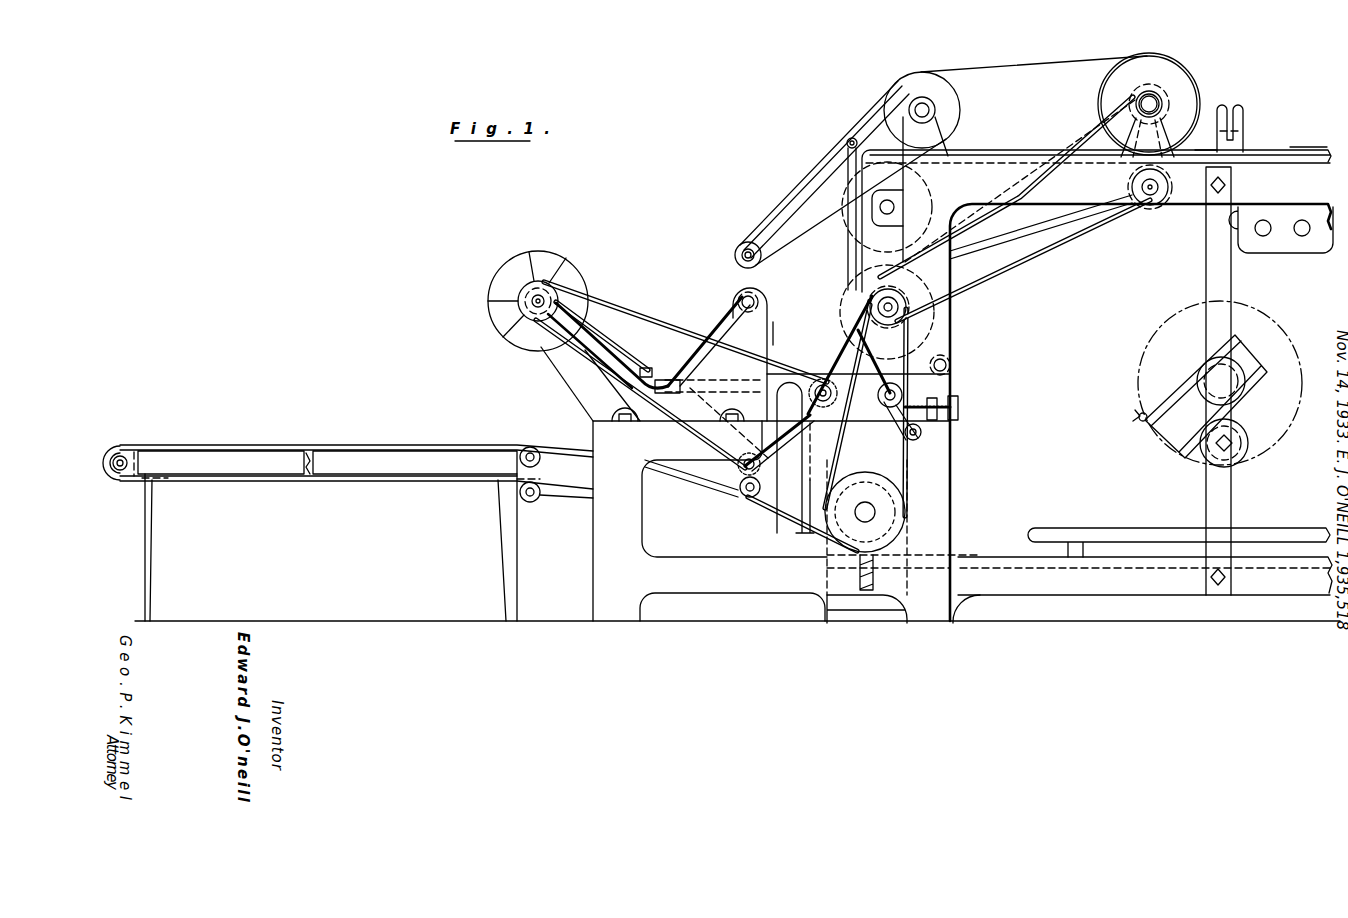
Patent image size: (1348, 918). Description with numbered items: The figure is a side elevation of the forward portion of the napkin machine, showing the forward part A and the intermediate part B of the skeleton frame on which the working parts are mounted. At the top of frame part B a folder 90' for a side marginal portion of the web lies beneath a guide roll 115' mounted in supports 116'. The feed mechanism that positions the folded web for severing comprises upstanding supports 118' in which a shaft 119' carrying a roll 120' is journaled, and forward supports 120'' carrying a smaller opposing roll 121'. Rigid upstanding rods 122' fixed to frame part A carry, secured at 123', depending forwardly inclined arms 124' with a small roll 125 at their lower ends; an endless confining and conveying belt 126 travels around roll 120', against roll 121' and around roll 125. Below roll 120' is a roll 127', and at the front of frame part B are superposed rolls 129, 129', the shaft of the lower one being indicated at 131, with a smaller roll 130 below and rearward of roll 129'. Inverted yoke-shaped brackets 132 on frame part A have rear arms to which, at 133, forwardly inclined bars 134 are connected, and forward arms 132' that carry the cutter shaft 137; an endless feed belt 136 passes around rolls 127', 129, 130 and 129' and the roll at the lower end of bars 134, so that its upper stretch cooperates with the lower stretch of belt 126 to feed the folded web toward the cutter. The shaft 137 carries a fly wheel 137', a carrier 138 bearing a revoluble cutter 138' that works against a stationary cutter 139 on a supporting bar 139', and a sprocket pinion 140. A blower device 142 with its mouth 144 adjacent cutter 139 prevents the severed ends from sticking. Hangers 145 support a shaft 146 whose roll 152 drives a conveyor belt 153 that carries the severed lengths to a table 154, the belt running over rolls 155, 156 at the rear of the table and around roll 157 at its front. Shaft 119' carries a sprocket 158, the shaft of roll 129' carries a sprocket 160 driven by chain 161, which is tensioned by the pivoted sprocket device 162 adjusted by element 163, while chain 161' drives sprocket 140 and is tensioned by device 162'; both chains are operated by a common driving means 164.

The folder 90' is at (1308, 139).
The guide roll 115' is at (1252, 124).
The supports 116' is at (1245, 138).
The upstanding supports 118' is at (1182, 121).
The shaft 119' is at (1187, 76).
The roll 120' is at (1127, 104).
The supports 120'' is at (962, 179).
The roll 121' is at (944, 91).
The upstanding rods 122' is at (832, 219).
The securing point 123' is at (849, 122).
The depending forwardly inclined arms 124' is at (843, 173).
The roll 125 is at (743, 250).
The endless confining and conveying belt 126 is at (1053, 63).
The roll 127' is at (887, 306).
The roll 129 is at (887, 207).
The roll 129' is at (873, 312).
The roll 130 is at (951, 363).
The shaft 131 is at (898, 307).
The inverted yoke-shaped brackets 132 is at (708, 396).
The forward arms 132' is at (586, 385).
The connection 133 is at (760, 288).
The bars 134 is at (717, 323).
The endless feed belt 136 is at (1081, 226).
The cutter shaft 137 is at (567, 284).
The fly wheel 137' is at (540, 282).
The carrier 138 is at (602, 323).
The revoluble cutter 138' is at (657, 354).
The stationary cutter 139 is at (652, 345).
The supporting bar 139' is at (652, 394).
The sprocket pinion 140 is at (513, 333).
The blower device 142 is at (782, 383).
The mouth 144 is at (680, 360).
The hangers 145 is at (750, 460).
The shaft 146 is at (758, 522).
The roll 152 is at (748, 498).
The conveyor belt 153 is at (690, 497).
The table 154 is at (413, 455).
The roll 155 is at (541, 458).
The roll 156 is at (541, 496).
The roll 157 is at (122, 446).
The sprocket 158 is at (1100, 118).
The sprocket 160 is at (907, 335).
The endless chain 161 is at (849, 355).
The endless chain 161' is at (783, 321).
The tensioning sprocket device 162 is at (939, 422).
The tensioning device 162' is at (788, 441).
The adjusting element 163 is at (953, 394).
The common driving means 164 is at (870, 512).
The forward frame part A is at (794, 470).
The intermediate frame part B is at (1188, 212).